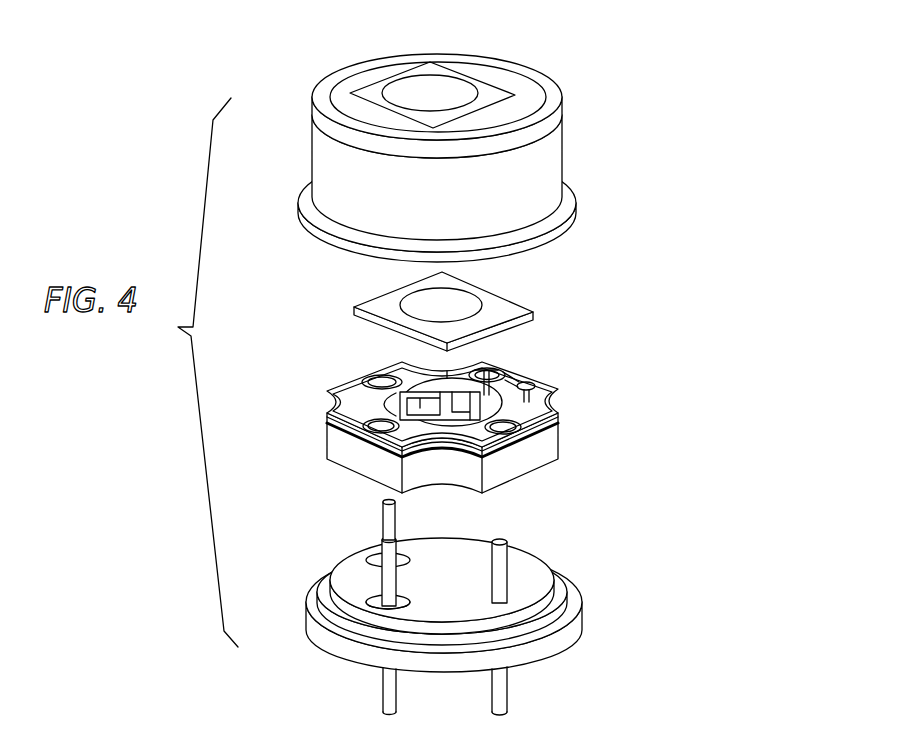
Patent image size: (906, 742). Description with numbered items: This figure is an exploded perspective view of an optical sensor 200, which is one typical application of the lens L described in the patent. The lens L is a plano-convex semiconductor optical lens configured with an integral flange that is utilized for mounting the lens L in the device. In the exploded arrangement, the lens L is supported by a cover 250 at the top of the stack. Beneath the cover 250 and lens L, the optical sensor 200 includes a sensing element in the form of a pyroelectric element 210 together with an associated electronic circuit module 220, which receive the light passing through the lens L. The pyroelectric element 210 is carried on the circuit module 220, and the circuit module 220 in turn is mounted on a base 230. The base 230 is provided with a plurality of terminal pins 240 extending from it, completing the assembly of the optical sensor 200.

The optical sensor 200 is at (464, 152).
The cover 250 is at (563, 167).
The lens L is at (468, 302).
The pyroelectric element 210 is at (490, 378).
The electronic circuit module 220 is at (476, 418).
The base 230 is at (563, 582).
The terminal pins 240 is at (507, 693).